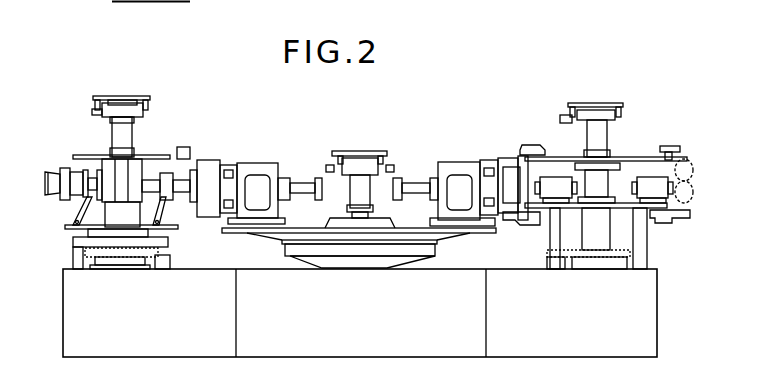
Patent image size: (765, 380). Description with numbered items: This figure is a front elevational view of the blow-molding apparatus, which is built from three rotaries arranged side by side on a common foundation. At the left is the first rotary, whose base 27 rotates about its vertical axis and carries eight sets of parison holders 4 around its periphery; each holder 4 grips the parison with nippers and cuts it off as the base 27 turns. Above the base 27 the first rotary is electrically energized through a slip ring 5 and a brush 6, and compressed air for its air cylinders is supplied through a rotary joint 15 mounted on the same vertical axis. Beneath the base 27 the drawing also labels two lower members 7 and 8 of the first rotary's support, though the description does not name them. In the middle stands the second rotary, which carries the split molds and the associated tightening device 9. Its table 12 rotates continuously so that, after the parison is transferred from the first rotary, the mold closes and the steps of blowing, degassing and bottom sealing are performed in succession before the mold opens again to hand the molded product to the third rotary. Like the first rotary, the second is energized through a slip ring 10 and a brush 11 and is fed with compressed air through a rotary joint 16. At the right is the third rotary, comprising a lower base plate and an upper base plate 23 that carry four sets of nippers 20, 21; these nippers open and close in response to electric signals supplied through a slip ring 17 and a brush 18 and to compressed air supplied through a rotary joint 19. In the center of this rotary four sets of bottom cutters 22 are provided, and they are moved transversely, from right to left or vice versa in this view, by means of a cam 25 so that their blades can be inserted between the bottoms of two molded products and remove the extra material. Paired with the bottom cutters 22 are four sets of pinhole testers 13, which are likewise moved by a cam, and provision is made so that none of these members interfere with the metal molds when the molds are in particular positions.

The parison holder 4 is at (55, 177).
The slip ring 5 is at (110, 107).
The brush 6 is at (95, 113).
The slide rack 7 is at (173, 252).
The slide base 8 is at (93, 255).
The tightening device 9 is at (255, 170).
The slip ring 10 is at (343, 162).
The brush 11 is at (387, 167).
The table 12 is at (298, 225).
The pinhole tester 13 is at (647, 158).
The rotary joint 15 is at (127, 132).
The rotary joint 16 is at (363, 197).
The slip ring 17 is at (590, 108).
The brush 18 is at (567, 120).
The rotary joint 19 is at (600, 140).
The nippers 20 is at (667, 152).
The nippers 21 is at (680, 222).
The bottom cutter 22 is at (555, 180).
The upper base plate 23 is at (535, 172).
The cam 25 is at (623, 210).
The base 27 is at (108, 163).